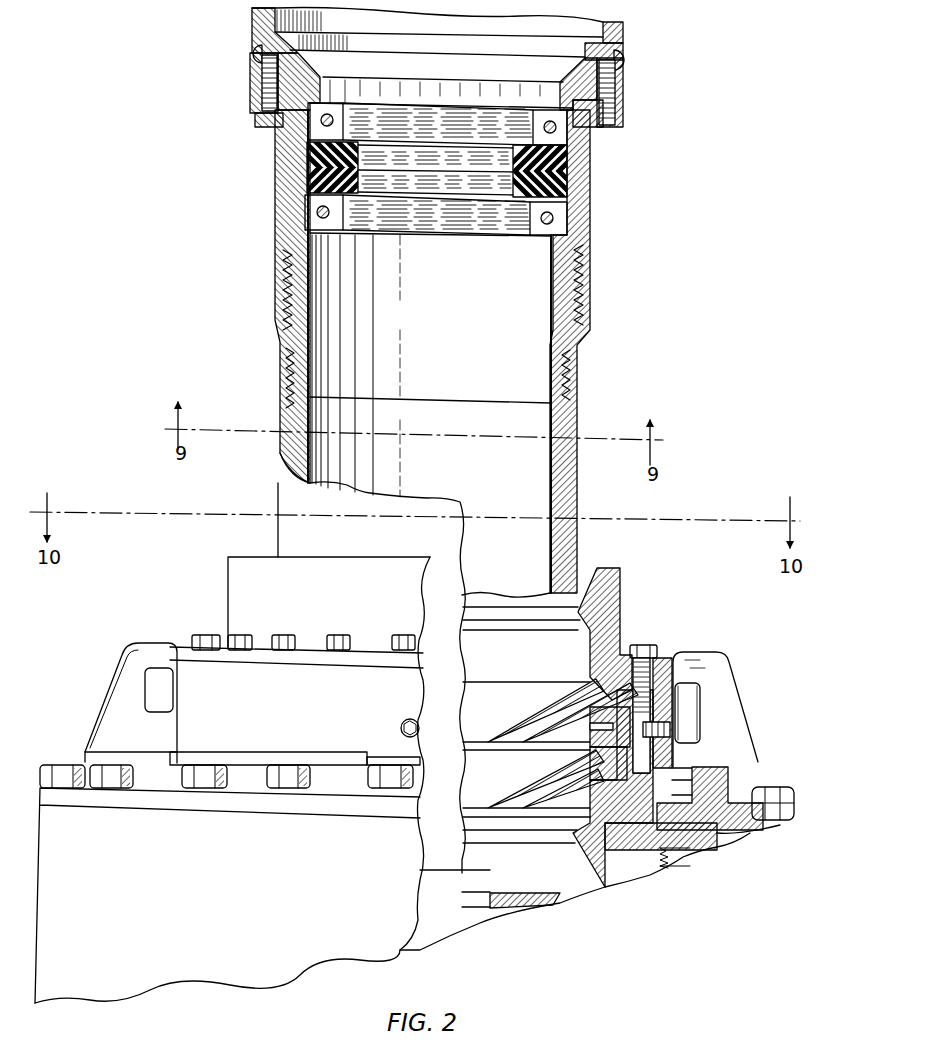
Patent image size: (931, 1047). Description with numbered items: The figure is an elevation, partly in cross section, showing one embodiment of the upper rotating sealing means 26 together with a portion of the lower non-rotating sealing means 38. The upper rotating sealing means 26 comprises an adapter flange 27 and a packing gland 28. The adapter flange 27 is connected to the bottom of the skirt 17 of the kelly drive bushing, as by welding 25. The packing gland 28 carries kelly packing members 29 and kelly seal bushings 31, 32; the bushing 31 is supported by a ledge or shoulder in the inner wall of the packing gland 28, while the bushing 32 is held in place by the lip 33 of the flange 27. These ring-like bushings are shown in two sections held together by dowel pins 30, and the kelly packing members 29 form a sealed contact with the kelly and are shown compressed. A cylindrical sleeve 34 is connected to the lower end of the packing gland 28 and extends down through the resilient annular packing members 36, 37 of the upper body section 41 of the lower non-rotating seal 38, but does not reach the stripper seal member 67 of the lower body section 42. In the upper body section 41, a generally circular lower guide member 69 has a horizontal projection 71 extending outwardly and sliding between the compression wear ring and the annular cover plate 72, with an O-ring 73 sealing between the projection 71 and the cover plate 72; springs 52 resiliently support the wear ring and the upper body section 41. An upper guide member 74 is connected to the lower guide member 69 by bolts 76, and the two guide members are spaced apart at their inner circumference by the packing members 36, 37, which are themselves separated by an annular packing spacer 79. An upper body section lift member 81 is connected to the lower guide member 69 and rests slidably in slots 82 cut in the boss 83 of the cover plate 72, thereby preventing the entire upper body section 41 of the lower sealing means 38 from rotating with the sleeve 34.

The skirt 17 is at (625, 41).
The welding 25 is at (250, 55).
The adapter flange 27 is at (627, 78).
The lip 33 is at (562, 97).
The kelly seal bushing 32 is at (533, 127).
The kelly packing members 29 is at (508, 185).
The packing gland 28 is at (590, 186).
The dowel pins 30 is at (552, 218).
The kelly seal bushing 31 is at (585, 252).
The upper rotating sealing means 26 is at (628, 290).
The cylindrical sleeve 34 is at (577, 396).
The upper guide member 74 is at (620, 592).
The upper body section 41 is at (641, 620).
The bolts 76 is at (655, 648).
The upper body section lift member 81 is at (718, 673).
The slots 82 is at (672, 764).
The boss 83 is at (712, 769).
The annular packing member 36 is at (545, 716).
The annular packing member 37 is at (530, 792).
The annular packing spacer 79 is at (592, 722).
The annular cover plate 72 is at (735, 802).
The O-ring 73 is at (718, 838).
The springs 52 is at (666, 862).
The horizontal projection 71 is at (645, 848).
The lower guide member 69 is at (582, 872).
The stripper seal member 67 is at (527, 895).
The lower non-rotating sealing means 38 is at (92, 686).
The lower body section 42 is at (204, 902).